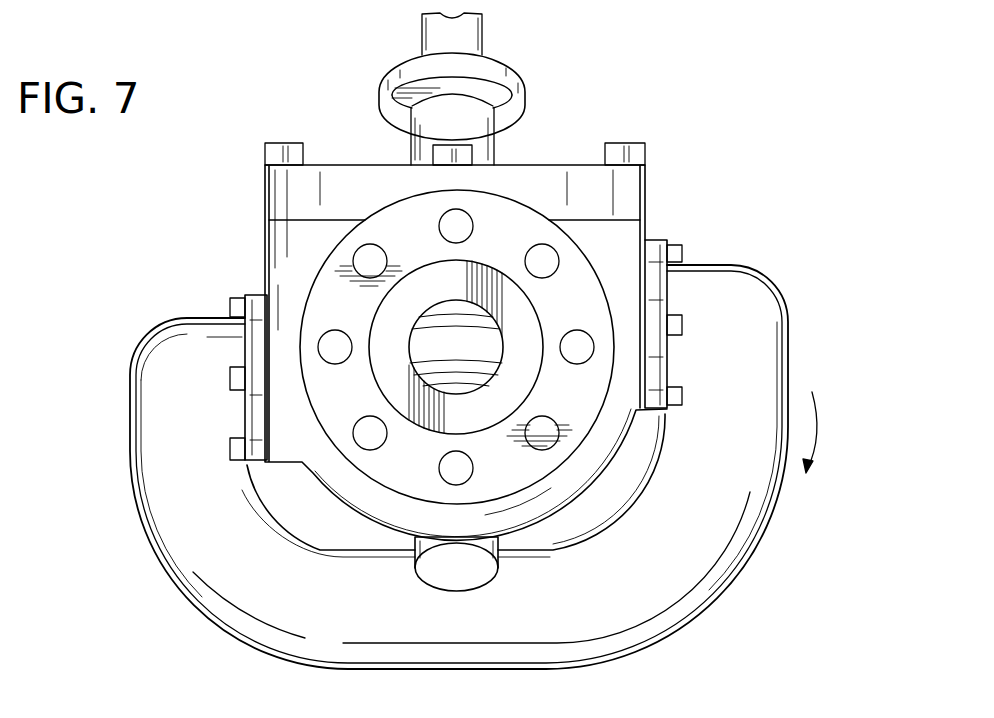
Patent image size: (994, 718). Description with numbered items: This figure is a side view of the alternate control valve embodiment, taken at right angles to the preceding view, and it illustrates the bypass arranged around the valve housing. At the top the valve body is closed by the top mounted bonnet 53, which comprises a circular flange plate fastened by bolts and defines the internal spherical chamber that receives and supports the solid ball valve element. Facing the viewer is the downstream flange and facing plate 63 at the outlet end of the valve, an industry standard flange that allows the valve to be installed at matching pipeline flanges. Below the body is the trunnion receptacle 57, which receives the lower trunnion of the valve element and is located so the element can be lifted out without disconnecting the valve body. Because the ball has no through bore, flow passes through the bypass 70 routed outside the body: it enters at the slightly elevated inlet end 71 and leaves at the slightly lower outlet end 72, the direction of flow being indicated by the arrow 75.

The bonnet 53 is at (555, 165).
The downstream flange and facing plate 63 is at (573, 277).
The inlet end of the bypass 71 is at (654, 307).
The outlet end of the bypass 72 is at (238, 390).
The trunnion receptacle 57 is at (318, 470).
The bypass 70 is at (610, 635).
The arrow 75 is at (814, 421).